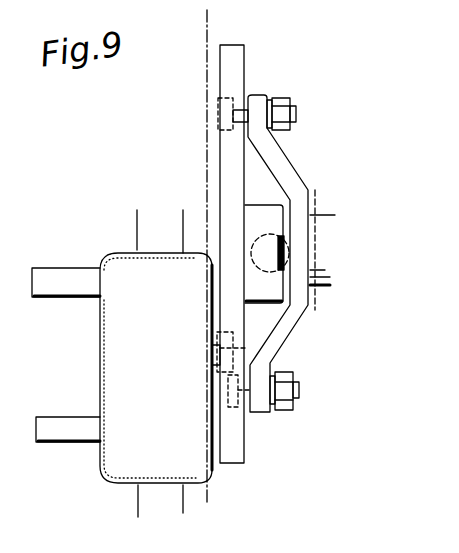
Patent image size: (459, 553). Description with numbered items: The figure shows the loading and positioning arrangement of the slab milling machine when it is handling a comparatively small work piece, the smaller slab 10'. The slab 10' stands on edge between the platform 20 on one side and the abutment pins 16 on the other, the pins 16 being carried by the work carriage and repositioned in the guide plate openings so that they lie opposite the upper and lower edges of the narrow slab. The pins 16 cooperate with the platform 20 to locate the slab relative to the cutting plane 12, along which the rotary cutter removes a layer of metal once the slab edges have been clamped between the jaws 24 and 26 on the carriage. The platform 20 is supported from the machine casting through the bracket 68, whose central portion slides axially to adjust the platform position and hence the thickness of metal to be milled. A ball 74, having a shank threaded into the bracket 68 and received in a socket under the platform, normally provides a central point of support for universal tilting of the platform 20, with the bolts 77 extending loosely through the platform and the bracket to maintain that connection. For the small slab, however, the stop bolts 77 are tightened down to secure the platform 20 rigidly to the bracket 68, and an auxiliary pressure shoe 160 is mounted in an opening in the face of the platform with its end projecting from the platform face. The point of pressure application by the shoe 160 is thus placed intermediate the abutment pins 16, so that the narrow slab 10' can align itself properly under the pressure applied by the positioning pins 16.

The smaller slab 10' is at (137, 368).
The cutting plane 12 is at (206, 163).
The abutment pins 16 is at (76, 290).
The platform 20 is at (220, 137).
The jaw 24 is at (137, 233).
The jaw 26 is at (138, 508).
The bracket 68 is at (298, 178).
The ball 74 is at (258, 245).
The stop bolts 77 is at (296, 118).
The auxiliary pressure shoe 160 is at (212, 336).